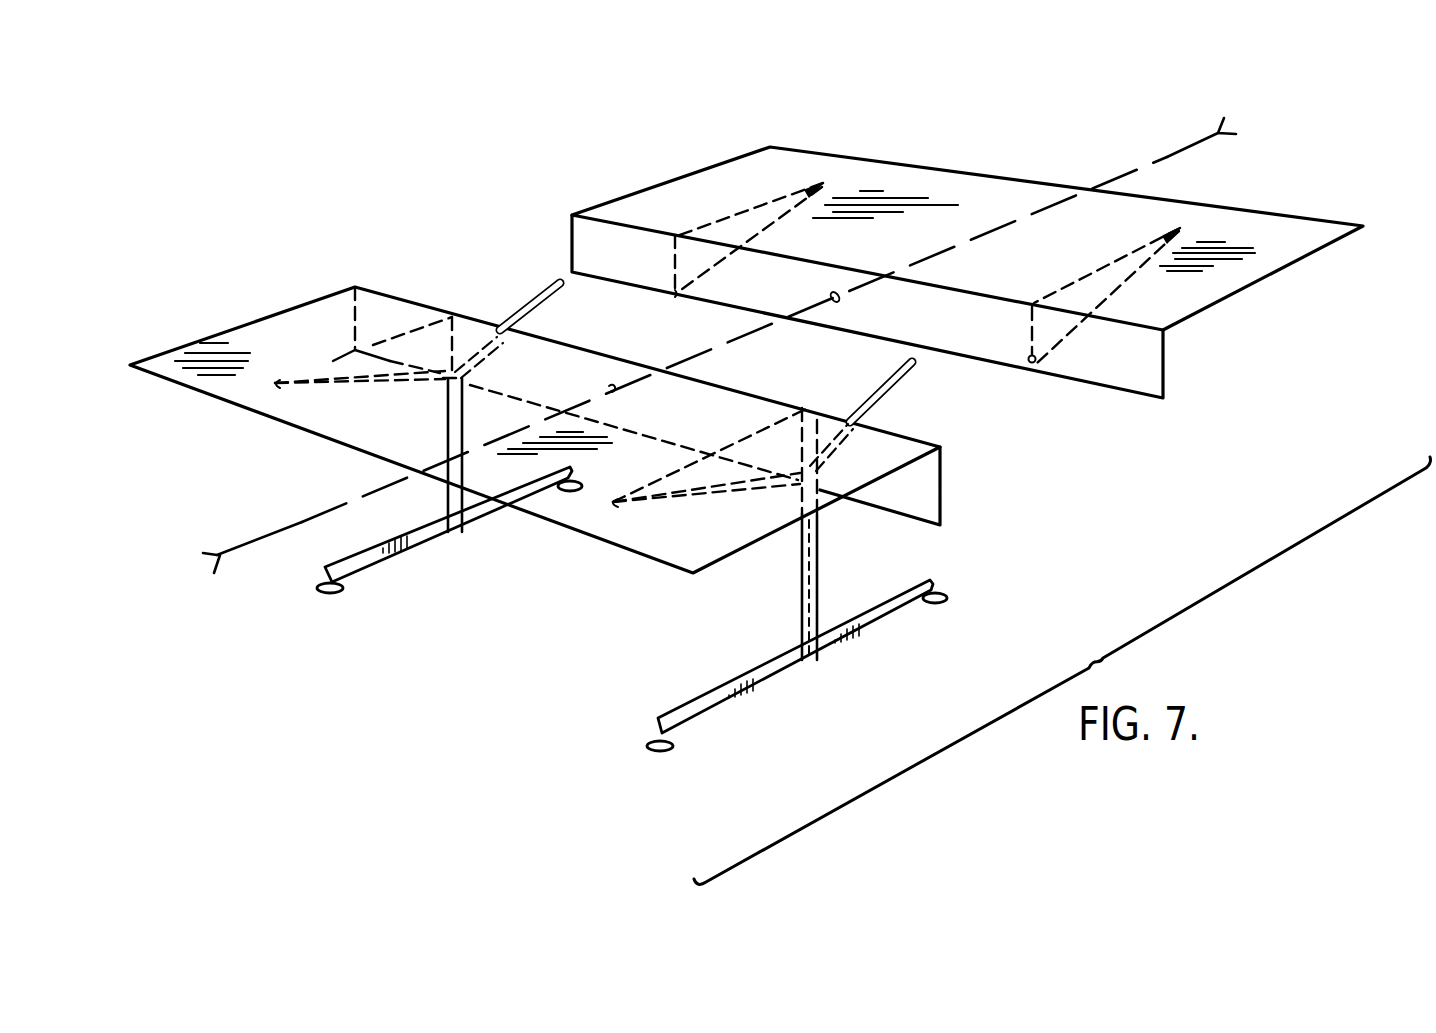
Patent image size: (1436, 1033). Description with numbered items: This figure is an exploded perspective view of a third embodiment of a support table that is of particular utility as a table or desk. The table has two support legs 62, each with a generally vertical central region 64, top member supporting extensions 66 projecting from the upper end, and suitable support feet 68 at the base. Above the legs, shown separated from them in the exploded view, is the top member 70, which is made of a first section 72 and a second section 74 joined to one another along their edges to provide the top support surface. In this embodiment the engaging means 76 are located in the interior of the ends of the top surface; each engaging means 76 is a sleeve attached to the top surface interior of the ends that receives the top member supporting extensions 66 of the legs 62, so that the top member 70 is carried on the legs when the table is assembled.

The support leg 62 is at (405, 557).
The vertical central region 64 is at (818, 537).
The top member supporting extension 66 is at (899, 380).
The support foot 68 is at (876, 623).
The top member 70 is at (912, 165).
The first section 72 is at (657, 202).
The second section 74 is at (585, 247).
The engaging means 76 is at (1040, 364).